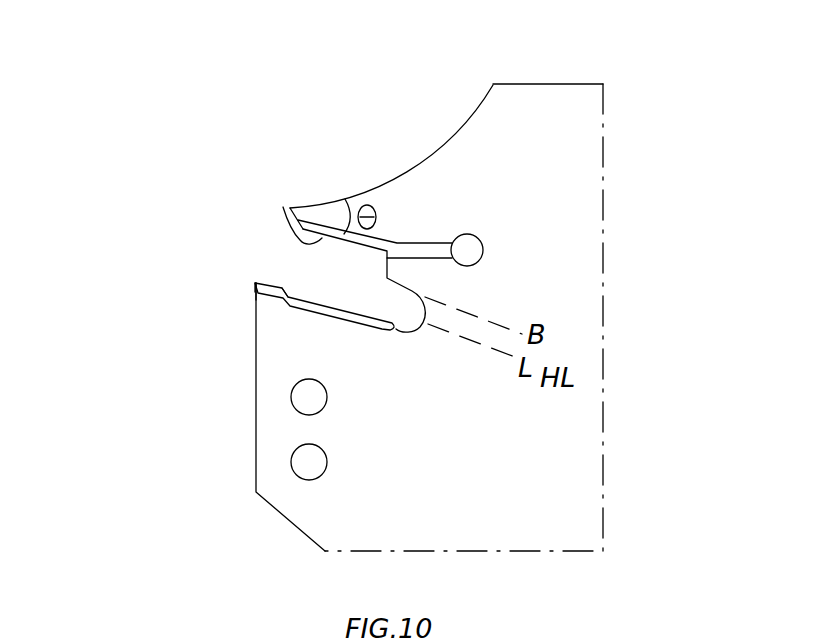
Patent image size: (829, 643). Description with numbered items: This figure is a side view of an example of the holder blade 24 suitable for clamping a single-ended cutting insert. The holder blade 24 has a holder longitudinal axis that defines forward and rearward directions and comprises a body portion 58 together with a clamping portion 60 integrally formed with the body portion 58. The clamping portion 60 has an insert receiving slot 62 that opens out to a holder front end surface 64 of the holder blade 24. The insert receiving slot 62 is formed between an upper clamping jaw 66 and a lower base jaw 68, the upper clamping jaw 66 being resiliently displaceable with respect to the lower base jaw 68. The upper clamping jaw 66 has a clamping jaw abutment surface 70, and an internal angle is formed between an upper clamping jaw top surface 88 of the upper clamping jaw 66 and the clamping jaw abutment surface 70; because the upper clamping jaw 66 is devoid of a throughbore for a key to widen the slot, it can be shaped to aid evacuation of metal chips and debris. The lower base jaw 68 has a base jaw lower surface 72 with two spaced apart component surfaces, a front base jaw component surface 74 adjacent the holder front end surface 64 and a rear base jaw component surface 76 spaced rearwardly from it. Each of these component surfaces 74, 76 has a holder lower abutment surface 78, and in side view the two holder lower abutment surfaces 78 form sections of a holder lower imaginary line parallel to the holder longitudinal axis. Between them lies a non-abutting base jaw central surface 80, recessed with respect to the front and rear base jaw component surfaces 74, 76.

The holder blade 24 is at (198, 65).
The body portion 58 is at (632, 212).
The clamping portion 60 is at (337, 160).
The insert receiving slot 62 is at (274, 222).
The holder front end surface 64 is at (256, 453).
The upper clamping jaw 66 is at (443, 117).
The lower base jaw 68 is at (232, 381).
The clamping jaw abutment surface 70 is at (283, 207).
The base jaw lower surface 72 is at (334, 292).
The front base jaw component surface 74 is at (247, 277).
The rear base jaw component surface 76 is at (386, 306).
The holder lower abutment surface 78 is at (272, 282).
The non-abutting base jaw central surface 80 is at (317, 297).
The upper clamping jaw top surface 88 is at (413, 168).